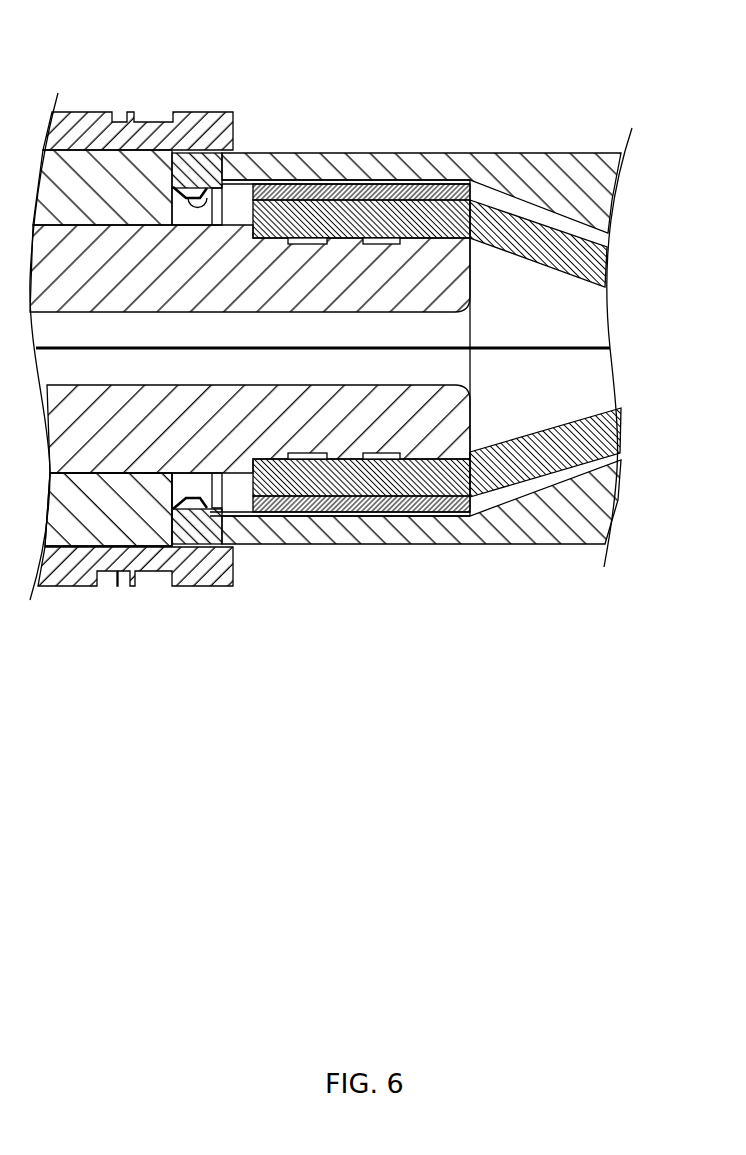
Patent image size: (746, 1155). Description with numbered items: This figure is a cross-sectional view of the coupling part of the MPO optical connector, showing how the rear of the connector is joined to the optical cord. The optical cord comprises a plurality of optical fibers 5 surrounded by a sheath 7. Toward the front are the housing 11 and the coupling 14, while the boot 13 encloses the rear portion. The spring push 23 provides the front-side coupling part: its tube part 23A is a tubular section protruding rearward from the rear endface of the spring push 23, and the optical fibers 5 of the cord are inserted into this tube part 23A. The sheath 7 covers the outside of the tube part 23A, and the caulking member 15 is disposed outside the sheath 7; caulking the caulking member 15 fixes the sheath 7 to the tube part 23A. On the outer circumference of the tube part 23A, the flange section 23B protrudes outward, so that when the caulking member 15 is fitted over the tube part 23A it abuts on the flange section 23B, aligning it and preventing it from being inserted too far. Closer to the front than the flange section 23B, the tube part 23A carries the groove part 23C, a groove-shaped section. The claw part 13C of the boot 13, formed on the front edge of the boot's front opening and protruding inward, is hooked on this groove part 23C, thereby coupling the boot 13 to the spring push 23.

The optical fibers 5 is at (500, 200).
The sheath 7 is at (535, 347).
The housing 11 is at (150, 150).
The boot 13 is at (582, 157).
The claw part 13C is at (205, 192).
The coupling 14 is at (84, 113).
The caulking member 15 is at (403, 186).
The spring push 23 is at (93, 457).
The tube part 23A is at (348, 440).
The flange section 23B is at (238, 182).
The groove part 23C is at (208, 190).